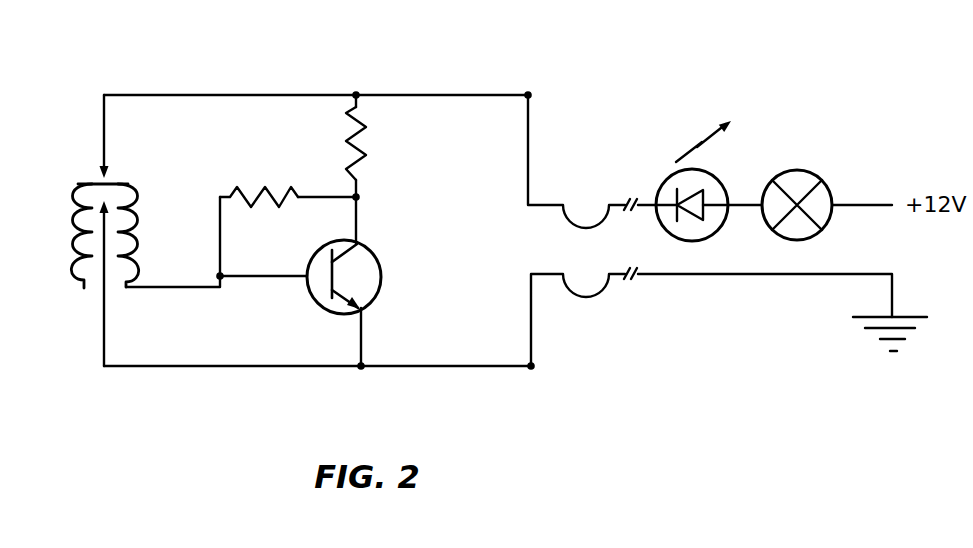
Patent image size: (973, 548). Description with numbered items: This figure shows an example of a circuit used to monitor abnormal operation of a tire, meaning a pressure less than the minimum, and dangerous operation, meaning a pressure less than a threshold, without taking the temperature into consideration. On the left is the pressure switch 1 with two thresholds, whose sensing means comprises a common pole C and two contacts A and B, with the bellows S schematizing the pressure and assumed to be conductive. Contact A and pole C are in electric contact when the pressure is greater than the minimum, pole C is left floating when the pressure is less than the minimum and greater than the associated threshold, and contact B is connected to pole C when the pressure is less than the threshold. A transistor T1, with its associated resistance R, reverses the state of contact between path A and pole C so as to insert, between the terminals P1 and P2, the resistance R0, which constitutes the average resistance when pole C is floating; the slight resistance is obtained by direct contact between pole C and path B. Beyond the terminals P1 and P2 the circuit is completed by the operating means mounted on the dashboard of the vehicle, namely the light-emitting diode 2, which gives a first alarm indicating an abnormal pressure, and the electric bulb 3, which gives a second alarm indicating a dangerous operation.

The pressure switch 1 is at (87, 302).
The bellows S is at (76, 238).
The contact A is at (100, 205).
The contact B is at (119, 153).
The common pole C is at (147, 190).
The resistance R is at (262, 190).
The resistance R0 is at (365, 146).
The transistor T1 is at (381, 268).
The terminal P1 is at (528, 91).
The terminal P2 is at (533, 368).
The light-emitting diode 2 is at (661, 229).
The electric bulb 3 is at (826, 218).